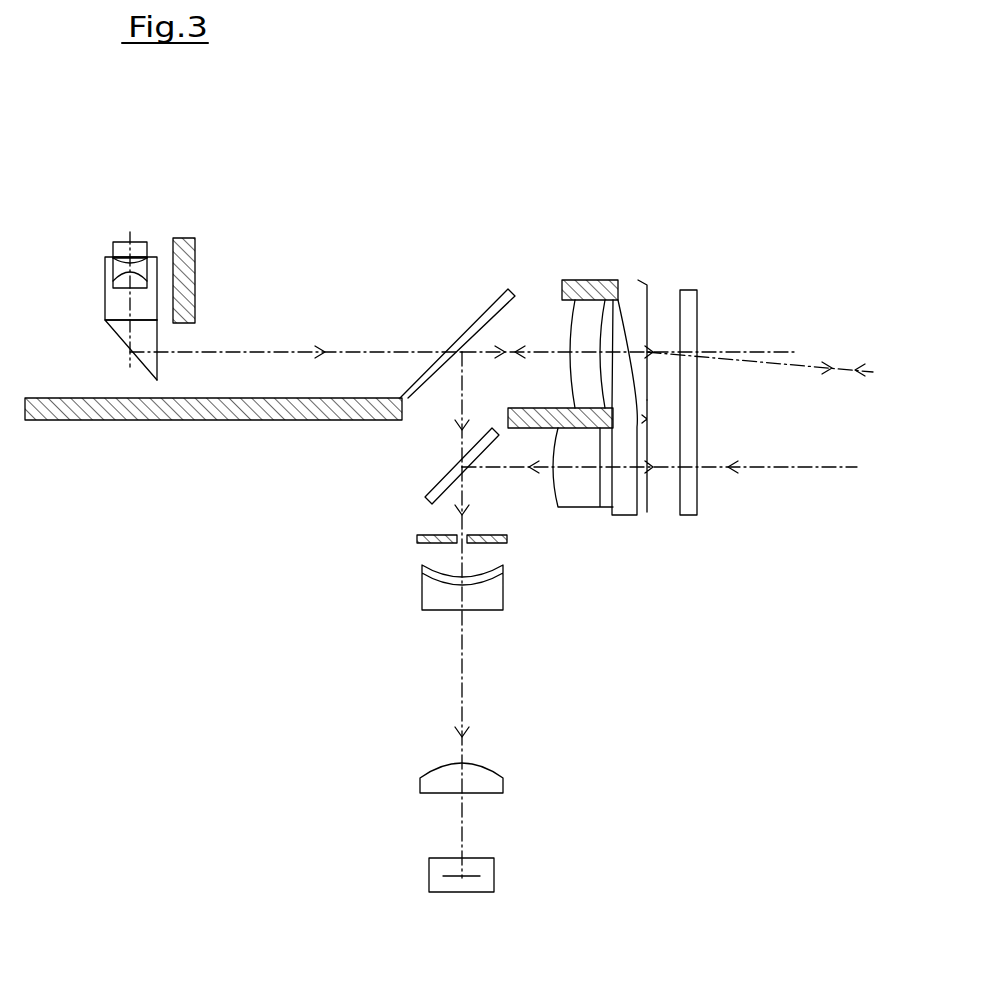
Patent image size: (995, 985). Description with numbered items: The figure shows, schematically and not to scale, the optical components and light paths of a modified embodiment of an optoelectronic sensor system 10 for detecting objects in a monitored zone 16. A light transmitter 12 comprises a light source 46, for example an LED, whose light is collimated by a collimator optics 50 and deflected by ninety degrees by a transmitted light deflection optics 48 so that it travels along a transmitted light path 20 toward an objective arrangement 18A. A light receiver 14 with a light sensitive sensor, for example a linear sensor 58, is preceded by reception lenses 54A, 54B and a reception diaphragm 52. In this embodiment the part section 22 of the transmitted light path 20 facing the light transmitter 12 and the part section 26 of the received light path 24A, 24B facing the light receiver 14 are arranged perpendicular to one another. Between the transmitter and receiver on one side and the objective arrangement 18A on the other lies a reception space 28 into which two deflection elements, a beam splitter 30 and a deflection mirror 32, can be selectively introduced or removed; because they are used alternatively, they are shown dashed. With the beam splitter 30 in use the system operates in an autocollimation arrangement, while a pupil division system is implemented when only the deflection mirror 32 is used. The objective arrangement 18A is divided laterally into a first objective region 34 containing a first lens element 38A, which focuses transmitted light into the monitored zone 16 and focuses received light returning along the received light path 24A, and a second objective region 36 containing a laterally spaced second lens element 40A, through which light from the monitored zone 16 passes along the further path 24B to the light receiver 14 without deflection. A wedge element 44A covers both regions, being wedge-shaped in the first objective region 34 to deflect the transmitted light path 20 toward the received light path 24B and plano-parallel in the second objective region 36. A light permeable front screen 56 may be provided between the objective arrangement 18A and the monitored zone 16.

The optoelectronic sensor system 10 is at (377, 193).
The light transmitter 12 is at (112, 273).
The light receiver 14 is at (487, 882).
The monitored zone 16 is at (828, 290).
The objective arrangement 18A is at (577, 365).
The transmitted light path 20 is at (757, 363).
The part section of the transmitted light path 22 is at (362, 350).
The received light path 24A is at (482, 248).
The further transmitted light path 24B is at (787, 466).
The part section of the received light path 26 is at (463, 690).
The reception space 28 is at (487, 690).
The beam splitter 30 is at (472, 327).
The deflection mirror 32 is at (442, 477).
The first objective region 34 is at (648, 347).
The second objective region 36 is at (646, 485).
The first lens element 38A is at (571, 335).
The second lens element 40A is at (577, 495).
The wedge element 44A is at (623, 515).
The light source 46 is at (140, 248).
The transmitted light deflection optics 48 is at (117, 330).
The collimator optics 50 is at (118, 277).
The reception diaphragm 52 is at (417, 540).
The reception lens 54A is at (490, 597).
The reception lens 54B is at (490, 786).
The front screen 56 is at (688, 438).
The linear sensor 58 is at (464, 878).